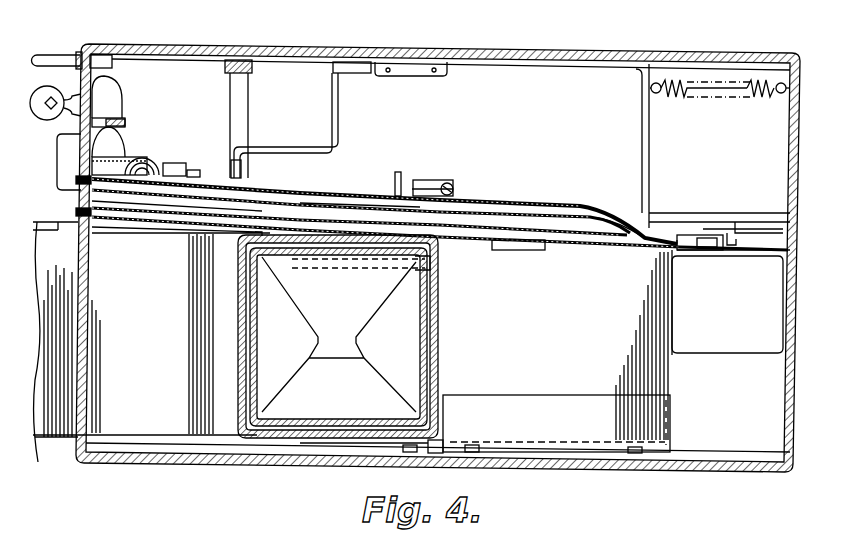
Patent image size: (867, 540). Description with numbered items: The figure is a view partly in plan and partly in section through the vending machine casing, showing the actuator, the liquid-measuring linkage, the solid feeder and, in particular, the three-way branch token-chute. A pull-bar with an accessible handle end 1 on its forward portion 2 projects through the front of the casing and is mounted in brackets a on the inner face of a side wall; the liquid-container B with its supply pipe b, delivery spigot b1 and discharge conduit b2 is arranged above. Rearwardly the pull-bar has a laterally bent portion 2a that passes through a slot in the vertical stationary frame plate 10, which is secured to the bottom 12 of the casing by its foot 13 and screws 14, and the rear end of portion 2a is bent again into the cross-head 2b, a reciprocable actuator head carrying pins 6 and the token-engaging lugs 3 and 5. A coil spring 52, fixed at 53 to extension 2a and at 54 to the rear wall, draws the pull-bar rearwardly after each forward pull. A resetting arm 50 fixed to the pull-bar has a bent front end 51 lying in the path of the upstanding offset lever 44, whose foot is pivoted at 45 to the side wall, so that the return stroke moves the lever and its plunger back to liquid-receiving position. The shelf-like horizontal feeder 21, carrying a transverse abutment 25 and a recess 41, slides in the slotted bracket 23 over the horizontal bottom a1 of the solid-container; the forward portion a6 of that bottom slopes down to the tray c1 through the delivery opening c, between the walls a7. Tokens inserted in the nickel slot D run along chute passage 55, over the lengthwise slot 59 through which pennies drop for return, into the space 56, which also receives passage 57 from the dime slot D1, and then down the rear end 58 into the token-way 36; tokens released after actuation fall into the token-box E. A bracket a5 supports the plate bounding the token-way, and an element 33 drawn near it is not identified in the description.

The handle end 1 is at (55, 50).
The brackets a is at (106, 57).
The pull-bar 2 is at (172, 61).
The pivot 45 is at (223, 63).
The offset lever 44 is at (232, 128).
The liquid delivery device b1 is at (58, 103).
The discharge conduit b2 is at (130, 153).
The supply pipe b is at (144, 176).
The resetting arm 50 is at (340, 108).
The bent front end 51 is at (231, 159).
The laterally-bent portion 2a is at (650, 144).
The cross-head 2b is at (708, 222).
The spring front fixing 53 is at (648, 91).
The coil spring 52 is at (746, 97).
The spring rear fixing 54 is at (783, 96).
The pins 6 is at (348, 190).
The nickel-receiving slot D is at (78, 181).
The dime-receiving slot D1 is at (78, 212).
The token-engaging lug 5 is at (258, 197).
The chute passage 57 is at (607, 247).
The chute passage 55 is at (560, 209).
The lengthwise slot 59 is at (362, 195).
The space 56 is at (658, 238).
The post 33 is at (402, 176).
The foot 13 is at (428, 182).
The bottom 12 is at (436, 168).
The screws 14 is at (458, 185).
The recess 41 is at (520, 250).
The horizontal partition a7 is at (173, 234).
The container bottom a1 is at (248, 296).
The sloping bottom portion a6 is at (147, 327).
The solid-delivery opening c is at (76, 325).
The tray c1 is at (47, 433).
The transverse abutment 25 is at (437, 341).
The feeder 21 is at (602, 345).
The slotted bracket 23 is at (485, 424).
The frame plate 10 is at (760, 226).
The token-way 36 is at (718, 237).
The token-engaging lug 3 is at (738, 241).
The chute rear end 58 is at (690, 252).
The bracket a5 is at (768, 262).
The token-box E is at (746, 357).
The liquid-container B is at (800, 191).